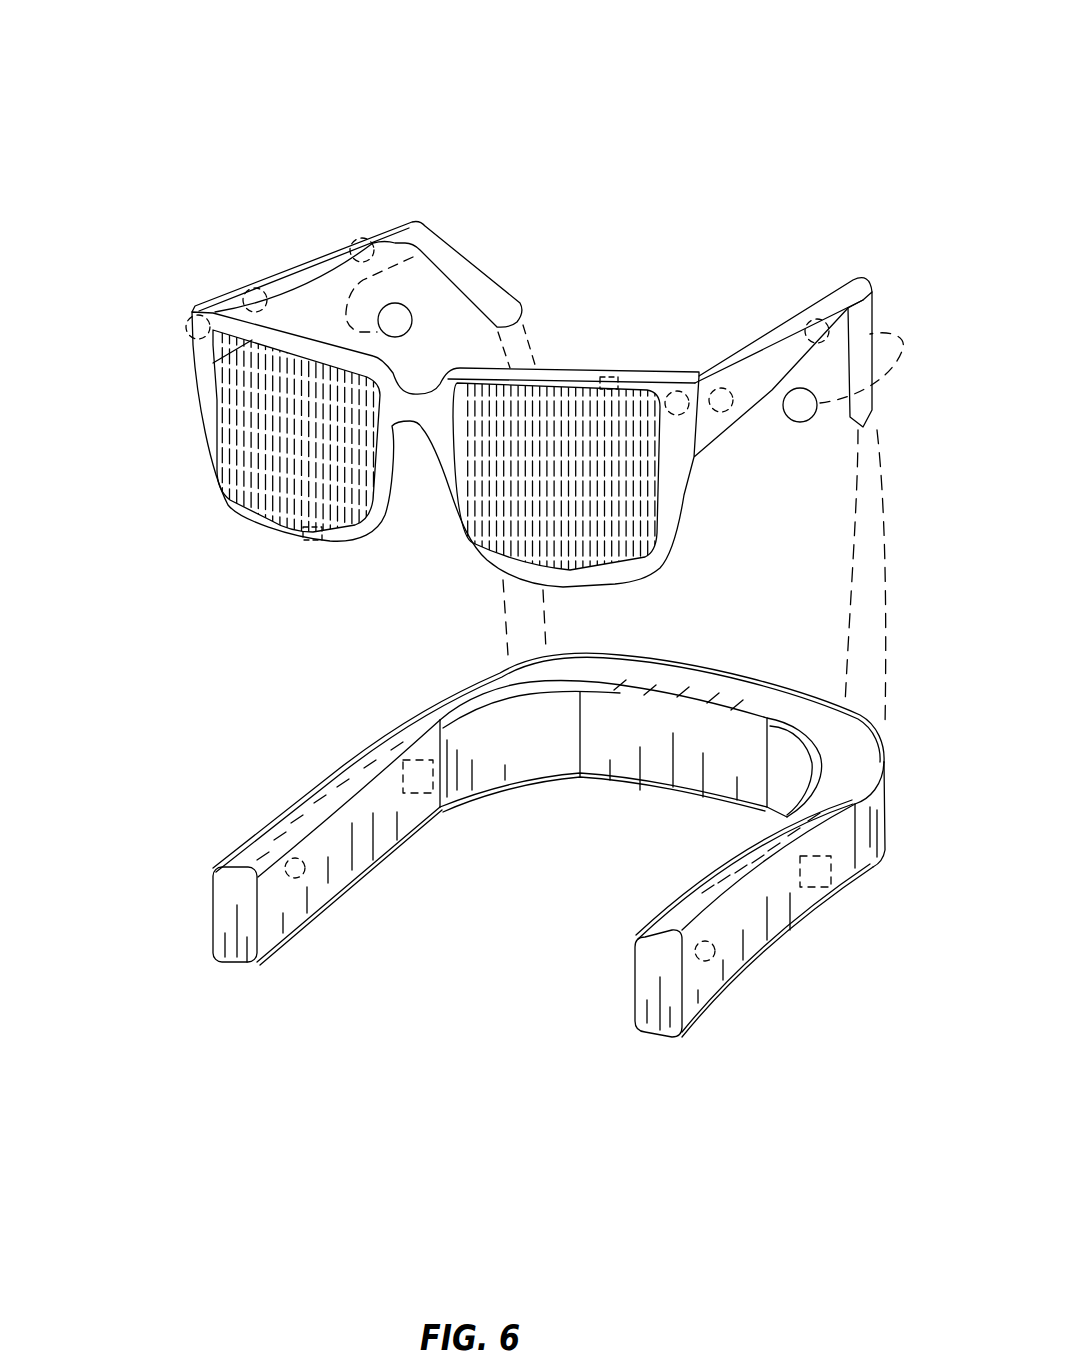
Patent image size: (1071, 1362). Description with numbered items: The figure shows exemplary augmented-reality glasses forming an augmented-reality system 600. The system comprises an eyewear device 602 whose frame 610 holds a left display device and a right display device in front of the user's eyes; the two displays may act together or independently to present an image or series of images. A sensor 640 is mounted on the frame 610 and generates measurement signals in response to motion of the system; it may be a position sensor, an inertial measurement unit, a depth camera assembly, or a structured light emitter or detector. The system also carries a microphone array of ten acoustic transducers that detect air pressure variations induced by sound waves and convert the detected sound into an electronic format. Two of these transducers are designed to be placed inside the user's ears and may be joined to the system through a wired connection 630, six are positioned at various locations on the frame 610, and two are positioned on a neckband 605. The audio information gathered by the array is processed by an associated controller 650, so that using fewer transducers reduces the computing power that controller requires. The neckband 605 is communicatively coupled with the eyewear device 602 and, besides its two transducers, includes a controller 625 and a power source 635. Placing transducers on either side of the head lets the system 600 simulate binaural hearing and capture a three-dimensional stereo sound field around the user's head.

The augmented-reality system 600 is at (112, 105).
The eyewear device 602 is at (410, 222).
The neckband 605 is at (213, 967).
The frame 610 is at (420, 232).
The controller 625 is at (808, 883).
The wired connection 630 is at (872, 598).
The power source 635 is at (418, 788).
The sensor 640 is at (310, 532).
The controller 650 is at (604, 376).